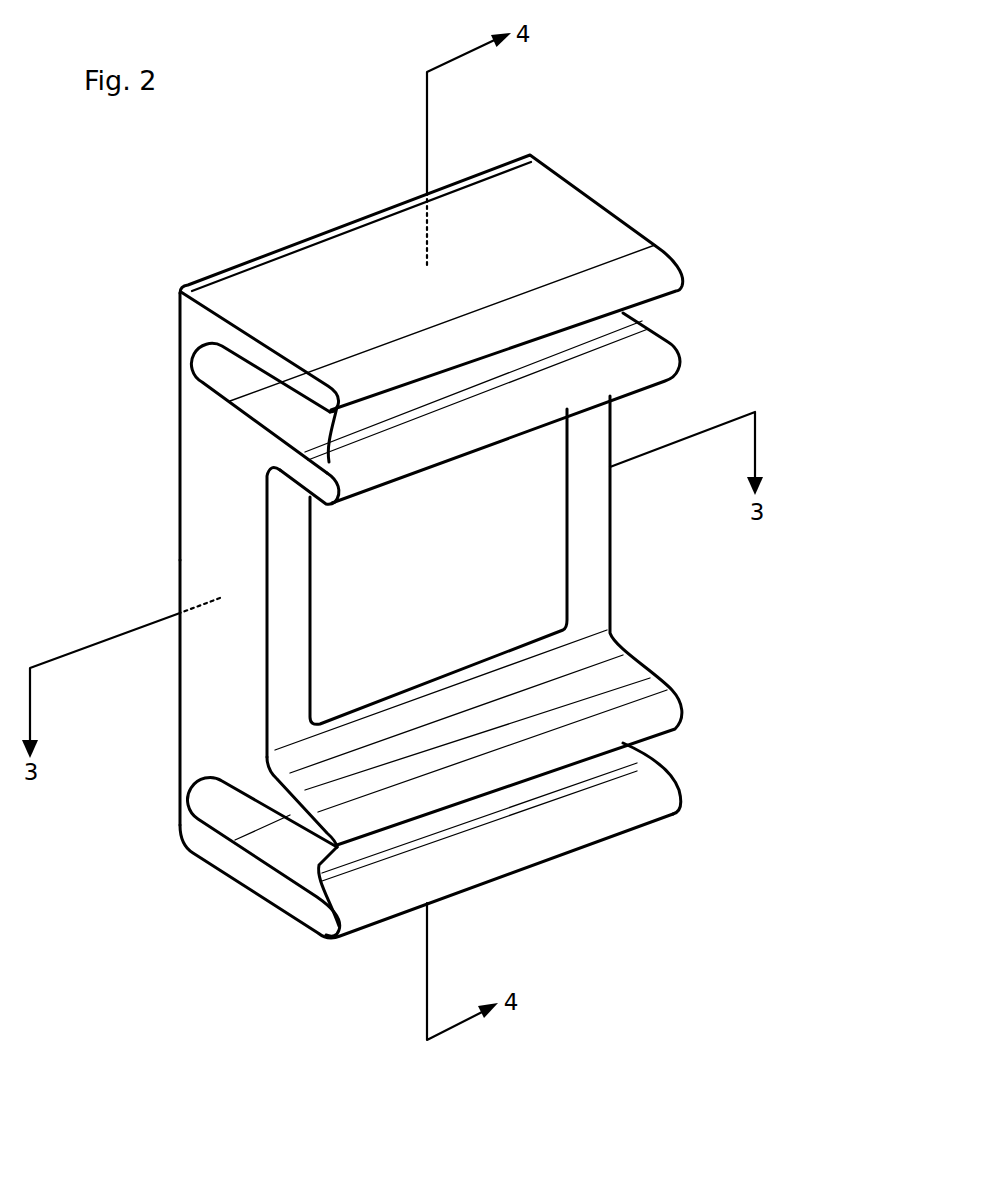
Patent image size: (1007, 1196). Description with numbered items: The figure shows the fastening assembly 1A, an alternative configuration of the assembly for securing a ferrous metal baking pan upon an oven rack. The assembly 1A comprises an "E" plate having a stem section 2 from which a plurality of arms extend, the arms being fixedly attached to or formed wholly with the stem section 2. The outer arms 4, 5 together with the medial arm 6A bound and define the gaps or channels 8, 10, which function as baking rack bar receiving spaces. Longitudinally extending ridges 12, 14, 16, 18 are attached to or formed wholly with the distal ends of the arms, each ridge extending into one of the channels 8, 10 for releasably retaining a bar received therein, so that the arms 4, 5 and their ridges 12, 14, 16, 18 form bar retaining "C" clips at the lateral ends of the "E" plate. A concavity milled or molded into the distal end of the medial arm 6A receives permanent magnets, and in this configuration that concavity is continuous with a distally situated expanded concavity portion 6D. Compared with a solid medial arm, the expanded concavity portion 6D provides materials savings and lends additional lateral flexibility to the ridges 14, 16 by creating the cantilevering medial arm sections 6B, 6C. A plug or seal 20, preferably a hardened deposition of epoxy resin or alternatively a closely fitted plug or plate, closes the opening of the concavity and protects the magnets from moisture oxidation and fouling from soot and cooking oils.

The fastening assembly 1A is at (655, 181).
The stem section 2 is at (193, 360).
The arm 4 is at (365, 318).
The arm 5 is at (253, 877).
The medial arm 6A is at (237, 572).
The cantilevering medial arm section 6B is at (303, 475).
The cantilevering medial arm section 6C is at (667, 707).
The expanded concavity portion 6D is at (347, 684).
The channel 8 is at (253, 383).
The channel 10 is at (230, 813).
The longitudinally extending ridge 12 is at (280, 402).
The longitudinally extending ridge 14 is at (645, 338).
The longitudinally extending ridge 16 is at (356, 848).
The longitudinally extending ridge 18 is at (655, 762).
The plug or seal 20 is at (545, 497).